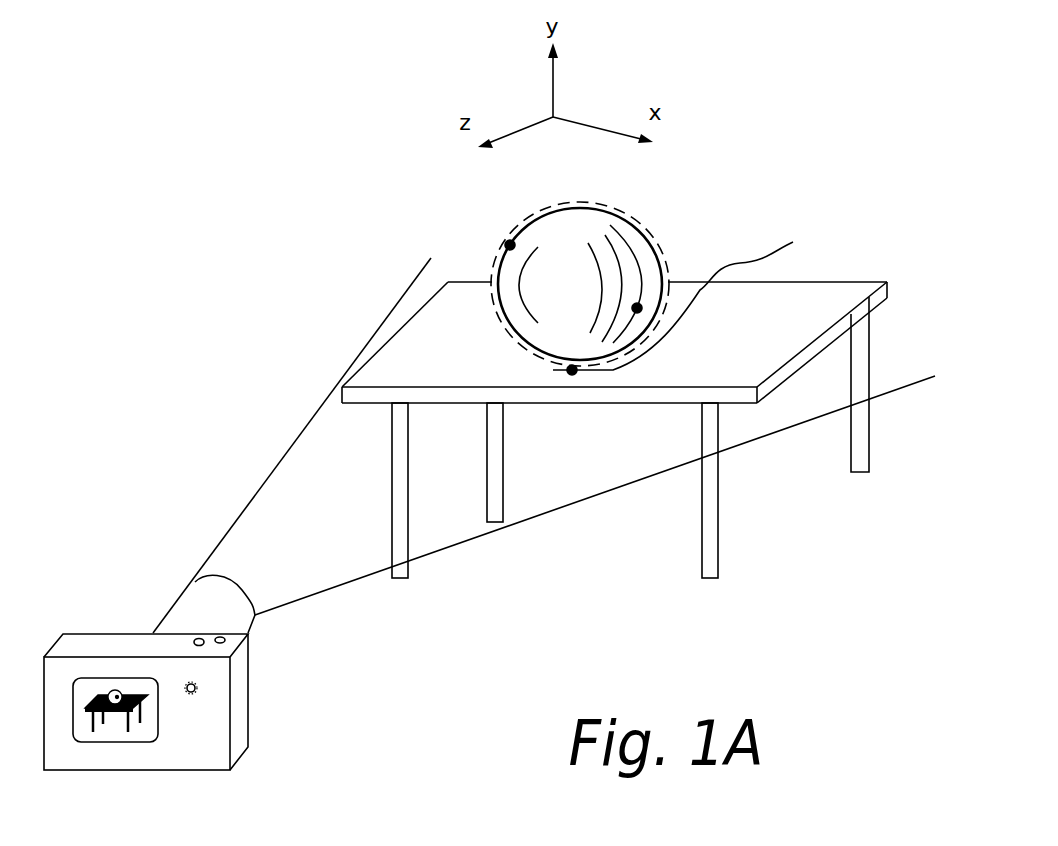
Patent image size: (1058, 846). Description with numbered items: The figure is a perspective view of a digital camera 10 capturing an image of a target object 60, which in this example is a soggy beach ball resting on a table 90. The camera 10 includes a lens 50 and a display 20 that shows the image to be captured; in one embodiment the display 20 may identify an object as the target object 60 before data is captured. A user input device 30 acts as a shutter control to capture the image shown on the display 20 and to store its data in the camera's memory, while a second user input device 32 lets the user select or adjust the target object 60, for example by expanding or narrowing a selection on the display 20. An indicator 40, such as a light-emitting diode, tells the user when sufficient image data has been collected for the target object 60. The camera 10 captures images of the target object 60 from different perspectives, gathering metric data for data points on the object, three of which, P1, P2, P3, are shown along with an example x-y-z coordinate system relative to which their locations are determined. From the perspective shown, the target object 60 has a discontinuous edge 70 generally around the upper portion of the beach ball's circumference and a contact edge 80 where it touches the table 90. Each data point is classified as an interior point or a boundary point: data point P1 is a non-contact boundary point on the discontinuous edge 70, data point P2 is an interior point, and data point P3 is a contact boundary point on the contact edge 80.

The digital camera 10 is at (77, 646).
The display 20 is at (85, 730).
The user input device 30 is at (226, 640).
The user input device 32 is at (204, 646).
The indicator 40 is at (197, 689).
The lens 50 is at (235, 587).
The target object 60 is at (570, 316).
The discontinuous edge 70 is at (623, 210).
The contact edge 80 is at (680, 293).
The table 90 is at (733, 351).
The data point P1 is at (510, 245).
The data point P2 is at (637, 308).
The data point P3 is at (572, 370).